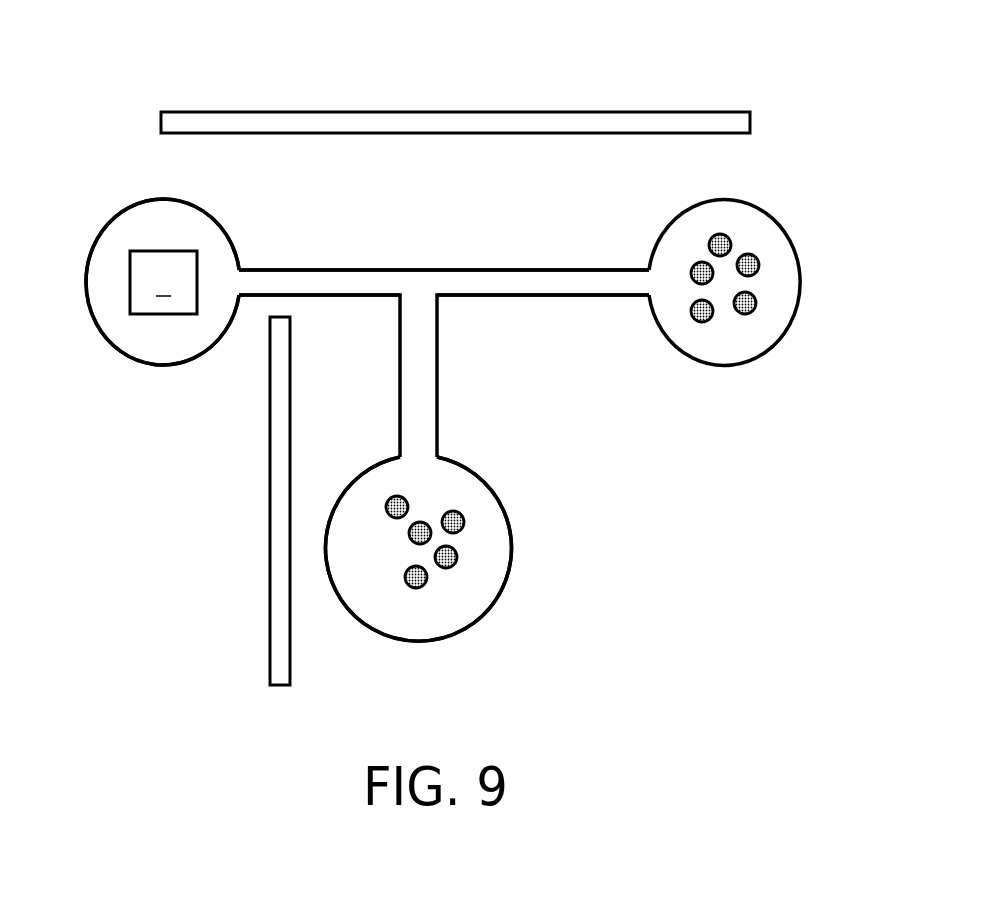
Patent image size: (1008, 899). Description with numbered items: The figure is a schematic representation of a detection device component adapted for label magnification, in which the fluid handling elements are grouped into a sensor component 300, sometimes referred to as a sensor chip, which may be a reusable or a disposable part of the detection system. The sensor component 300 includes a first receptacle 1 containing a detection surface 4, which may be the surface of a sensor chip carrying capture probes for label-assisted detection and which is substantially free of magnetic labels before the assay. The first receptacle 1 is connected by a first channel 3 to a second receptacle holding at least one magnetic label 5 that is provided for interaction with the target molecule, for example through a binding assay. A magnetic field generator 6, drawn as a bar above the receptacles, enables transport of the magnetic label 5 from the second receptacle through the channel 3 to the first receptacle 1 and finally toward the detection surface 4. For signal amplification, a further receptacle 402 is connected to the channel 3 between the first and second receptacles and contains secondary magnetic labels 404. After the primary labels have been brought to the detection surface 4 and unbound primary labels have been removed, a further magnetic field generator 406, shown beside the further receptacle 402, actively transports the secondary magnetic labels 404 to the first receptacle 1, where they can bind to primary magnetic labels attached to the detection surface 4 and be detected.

The sensor component 300 is at (750, 66).
The magnetic field generator 6 is at (502, 133).
The first receptacle 1 is at (88, 283).
The detection surface 4 is at (163, 282).
The first channel 3 is at (440, 269).
The magnetic label 5 is at (750, 314).
The secondary magnetic labels 404 is at (457, 558).
The further receptacle 402 is at (420, 640).
The further magnetic field generator 406 is at (269, 625).